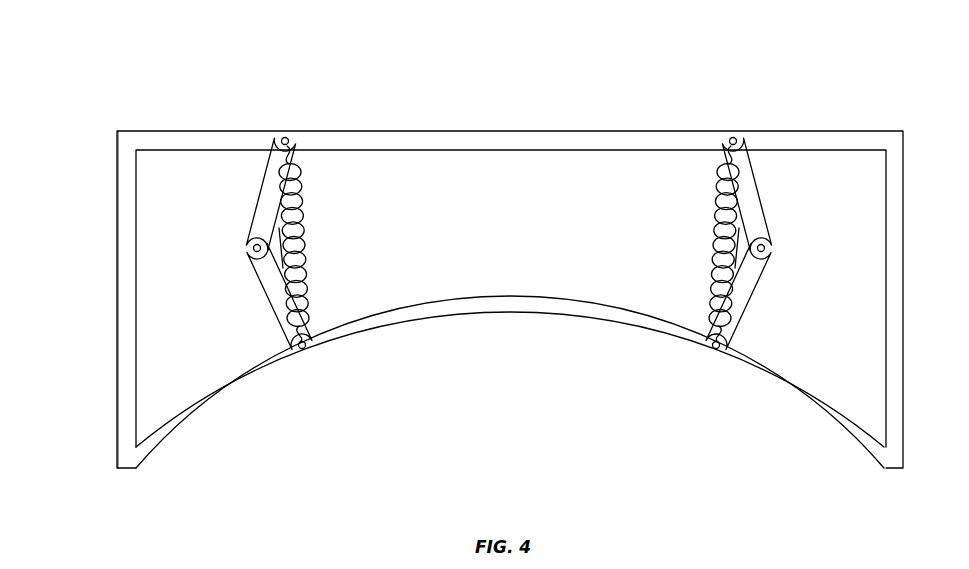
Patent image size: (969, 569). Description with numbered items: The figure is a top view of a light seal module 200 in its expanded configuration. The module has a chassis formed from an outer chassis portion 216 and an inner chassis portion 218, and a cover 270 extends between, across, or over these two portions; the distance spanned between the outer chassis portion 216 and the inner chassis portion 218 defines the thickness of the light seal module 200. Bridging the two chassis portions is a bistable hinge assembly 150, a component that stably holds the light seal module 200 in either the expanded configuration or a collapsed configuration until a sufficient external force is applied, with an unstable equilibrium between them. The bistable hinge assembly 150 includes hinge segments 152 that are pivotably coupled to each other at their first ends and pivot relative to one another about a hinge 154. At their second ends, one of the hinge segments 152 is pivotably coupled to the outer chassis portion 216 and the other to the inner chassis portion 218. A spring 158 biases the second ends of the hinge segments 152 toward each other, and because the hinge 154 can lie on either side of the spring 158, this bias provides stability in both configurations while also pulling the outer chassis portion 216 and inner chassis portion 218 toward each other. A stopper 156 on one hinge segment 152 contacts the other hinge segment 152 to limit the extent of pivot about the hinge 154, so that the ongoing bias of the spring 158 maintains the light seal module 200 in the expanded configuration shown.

The light seal module 200 is at (132, 46).
The outer chassis portion 216 is at (833, 138).
The inner chassis portion 218 is at (798, 388).
The cover 270 is at (128, 245).
The bistable hinge assembly 150 is at (511, 244).
The hinge segments 152 is at (268, 187).
The hinge 154 is at (255, 250).
The stopper 156 is at (302, 248).
The spring 158 is at (303, 268).